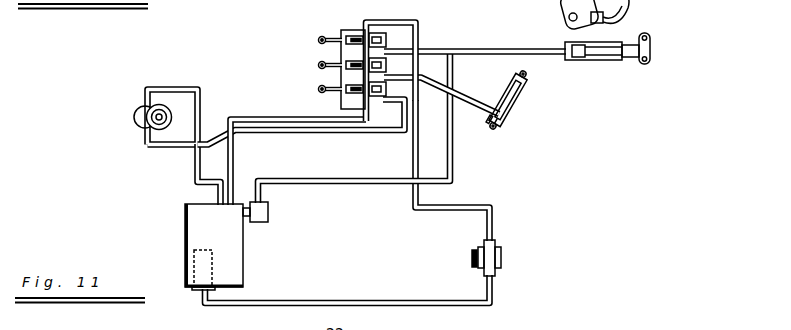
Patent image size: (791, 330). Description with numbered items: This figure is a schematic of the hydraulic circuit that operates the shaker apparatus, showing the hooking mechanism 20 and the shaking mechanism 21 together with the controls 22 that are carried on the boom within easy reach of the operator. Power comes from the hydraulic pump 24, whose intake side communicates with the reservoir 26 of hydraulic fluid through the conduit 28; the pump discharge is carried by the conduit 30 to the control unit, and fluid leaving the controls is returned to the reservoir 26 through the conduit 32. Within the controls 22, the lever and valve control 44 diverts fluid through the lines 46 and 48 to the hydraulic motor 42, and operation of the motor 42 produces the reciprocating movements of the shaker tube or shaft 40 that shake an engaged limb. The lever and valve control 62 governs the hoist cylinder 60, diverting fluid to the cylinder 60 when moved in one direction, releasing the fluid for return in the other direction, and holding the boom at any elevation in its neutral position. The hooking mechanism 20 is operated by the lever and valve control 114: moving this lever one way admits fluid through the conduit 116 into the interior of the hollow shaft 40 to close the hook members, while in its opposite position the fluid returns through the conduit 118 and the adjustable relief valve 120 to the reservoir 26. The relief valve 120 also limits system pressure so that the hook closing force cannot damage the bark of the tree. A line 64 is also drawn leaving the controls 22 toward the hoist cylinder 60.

The hooking mechanism 20 is at (652, 66).
The shaking mechanism 21 is at (128, 97).
The controls 22 is at (362, 20).
The hydraulic pump 24 is at (502, 258).
The reservoir 26 is at (190, 226).
The conduit 28 is at (335, 303).
The conduit 30 is at (450, 206).
The conduit 32 is at (276, 118).
The shaker tube or shaft 40 is at (570, 62).
The hydraulic motor 42 is at (134, 120).
The lever and valve control 44 is at (318, 88).
The line 46 is at (305, 134).
The line 48 is at (196, 173).
The hoist cylinder 60 is at (510, 114).
The lever and valve control 62 is at (318, 63).
The line 64 is at (477, 100).
The lever and valve control 114 is at (318, 37).
The conduit 116 is at (514, 50).
The conduit 118 is at (339, 179).
The adjustable relief valve 120 is at (258, 222).